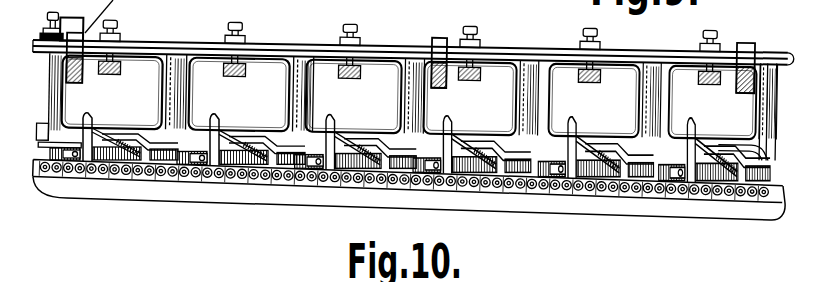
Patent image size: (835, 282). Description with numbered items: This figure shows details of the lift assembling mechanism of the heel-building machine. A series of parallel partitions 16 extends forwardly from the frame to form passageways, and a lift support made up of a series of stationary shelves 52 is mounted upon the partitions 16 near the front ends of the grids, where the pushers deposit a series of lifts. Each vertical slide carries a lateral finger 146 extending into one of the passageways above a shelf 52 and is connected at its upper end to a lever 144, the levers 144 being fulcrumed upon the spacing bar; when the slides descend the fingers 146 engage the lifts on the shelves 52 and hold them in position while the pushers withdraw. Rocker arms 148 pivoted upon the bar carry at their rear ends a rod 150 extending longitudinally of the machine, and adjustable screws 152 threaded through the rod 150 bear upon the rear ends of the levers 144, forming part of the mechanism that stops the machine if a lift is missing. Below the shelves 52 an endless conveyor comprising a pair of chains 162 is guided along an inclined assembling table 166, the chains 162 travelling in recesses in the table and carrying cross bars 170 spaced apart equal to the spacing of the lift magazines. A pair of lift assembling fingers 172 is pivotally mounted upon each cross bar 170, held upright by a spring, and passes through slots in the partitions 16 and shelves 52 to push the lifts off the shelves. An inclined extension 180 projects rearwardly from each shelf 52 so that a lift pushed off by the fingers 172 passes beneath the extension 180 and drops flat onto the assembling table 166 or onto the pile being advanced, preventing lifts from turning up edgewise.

The partitions 16 is at (295, 50).
The stationary shelves 52 is at (283, 175).
The lever 144 is at (363, 78).
The lateral finger 146 is at (438, 31).
The rocker arms 148 is at (758, 32).
The rod 150 is at (510, 51).
The adjustable screws 152 is at (364, 39).
The chains 162 is at (103, 175).
The inclined assembling table 166 is at (197, 187).
The cross bars 170 is at (313, 182).
The lift assembling fingers 172 is at (453, 128).
The inclined extension 180 is at (255, 138).